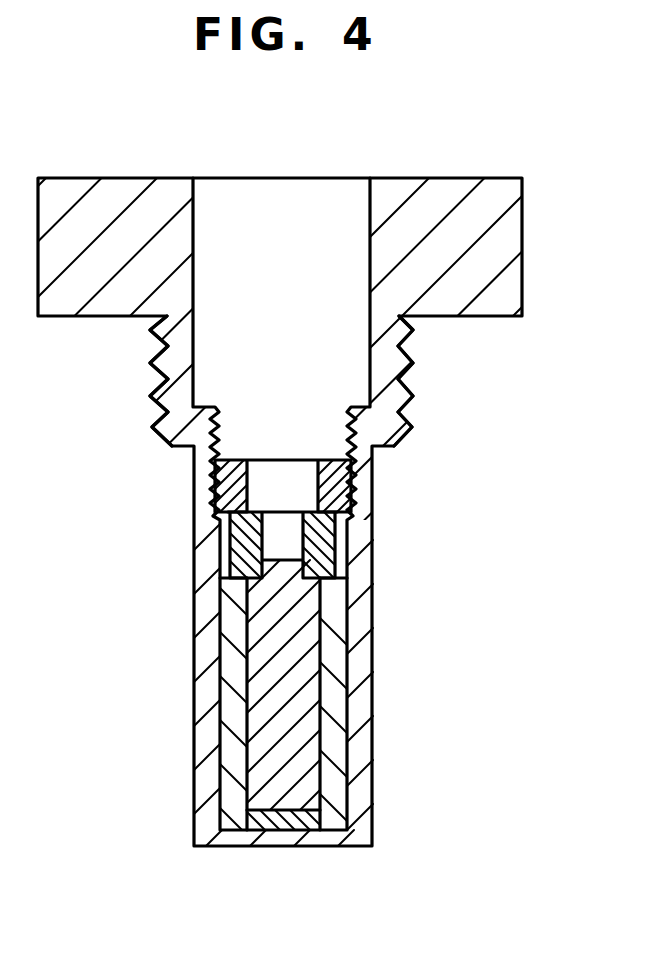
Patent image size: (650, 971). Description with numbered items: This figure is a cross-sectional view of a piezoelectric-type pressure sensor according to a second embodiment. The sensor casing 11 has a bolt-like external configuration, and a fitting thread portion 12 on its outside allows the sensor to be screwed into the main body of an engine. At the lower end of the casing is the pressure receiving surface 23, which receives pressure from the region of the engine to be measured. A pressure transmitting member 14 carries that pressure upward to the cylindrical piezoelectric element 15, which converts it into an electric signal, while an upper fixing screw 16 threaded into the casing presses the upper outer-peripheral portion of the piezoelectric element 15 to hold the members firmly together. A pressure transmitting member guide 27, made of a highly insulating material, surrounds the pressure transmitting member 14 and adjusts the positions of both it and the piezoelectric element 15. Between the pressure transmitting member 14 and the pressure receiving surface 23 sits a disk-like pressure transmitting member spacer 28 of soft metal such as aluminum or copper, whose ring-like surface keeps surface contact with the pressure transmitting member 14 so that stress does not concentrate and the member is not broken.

The sensor casing 11 is at (408, 357).
The fitting thread portion 12 is at (372, 732).
The pressure transmitting member 14 is at (320, 665).
The piezoelectric element 15 is at (335, 565).
The upper fixing screw 16 is at (347, 470).
The pressure receiving surface 23 is at (303, 848).
The pressure transmitting member guide 27 is at (350, 770).
The pressure transmitting member spacer 28 is at (320, 808).